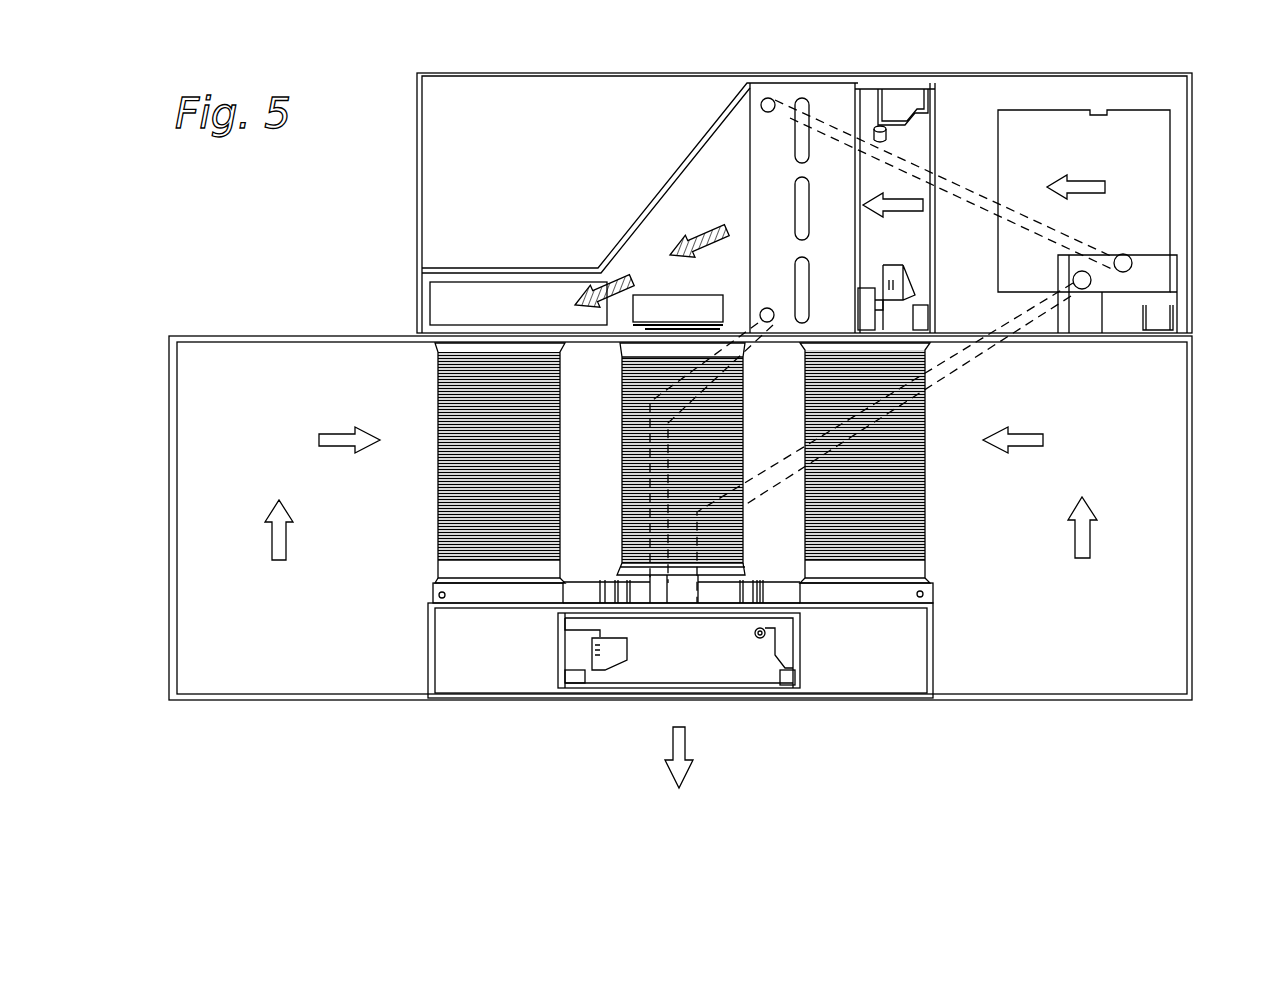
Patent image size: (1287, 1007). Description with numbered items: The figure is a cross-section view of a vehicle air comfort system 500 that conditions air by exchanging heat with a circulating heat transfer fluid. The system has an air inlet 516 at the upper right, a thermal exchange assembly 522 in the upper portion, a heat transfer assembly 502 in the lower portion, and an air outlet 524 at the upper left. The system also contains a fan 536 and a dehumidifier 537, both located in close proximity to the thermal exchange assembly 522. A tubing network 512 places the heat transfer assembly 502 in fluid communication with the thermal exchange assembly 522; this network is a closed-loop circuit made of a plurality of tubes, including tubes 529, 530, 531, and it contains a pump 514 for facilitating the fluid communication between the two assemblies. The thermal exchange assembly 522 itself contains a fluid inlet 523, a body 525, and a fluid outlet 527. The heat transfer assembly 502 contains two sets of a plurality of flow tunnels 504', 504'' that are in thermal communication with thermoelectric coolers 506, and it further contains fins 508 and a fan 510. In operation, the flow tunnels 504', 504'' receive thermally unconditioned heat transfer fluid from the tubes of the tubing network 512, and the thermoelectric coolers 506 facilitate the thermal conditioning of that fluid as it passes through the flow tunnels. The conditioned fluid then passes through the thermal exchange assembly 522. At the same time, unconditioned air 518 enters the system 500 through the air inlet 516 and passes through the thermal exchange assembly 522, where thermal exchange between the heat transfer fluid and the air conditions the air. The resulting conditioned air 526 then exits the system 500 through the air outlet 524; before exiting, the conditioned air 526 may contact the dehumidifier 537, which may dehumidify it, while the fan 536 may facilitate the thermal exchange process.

The vehicle air comfort system 500 is at (366, 735).
The heat transfer assembly 502 is at (389, 386).
The flow tunnels 504' is at (898, 590).
The flow tunnels 504'' is at (463, 591).
The thermoelectric coolers 506 is at (440, 578).
The fins 508 is at (435, 478).
The fan 510 is at (620, 647).
The tubing network 512 is at (1049, 373).
The pump 514 is at (1160, 321).
The air inlet 516 is at (1097, 108).
The unconditioned air 518 is at (1091, 186).
The thermal exchange assembly 522 is at (745, 58).
The fluid inlet 523 is at (768, 112).
The air outlet 524 is at (512, 282).
The body 525 is at (750, 182).
The conditioned air 526 is at (622, 283).
The fluid outlet 527 is at (767, 307).
The tube 529 is at (953, 188).
The tube 530 is at (952, 363).
The tube 531 is at (735, 345).
The fan 536 is at (898, 310).
The dehumidifier 537 is at (660, 295).